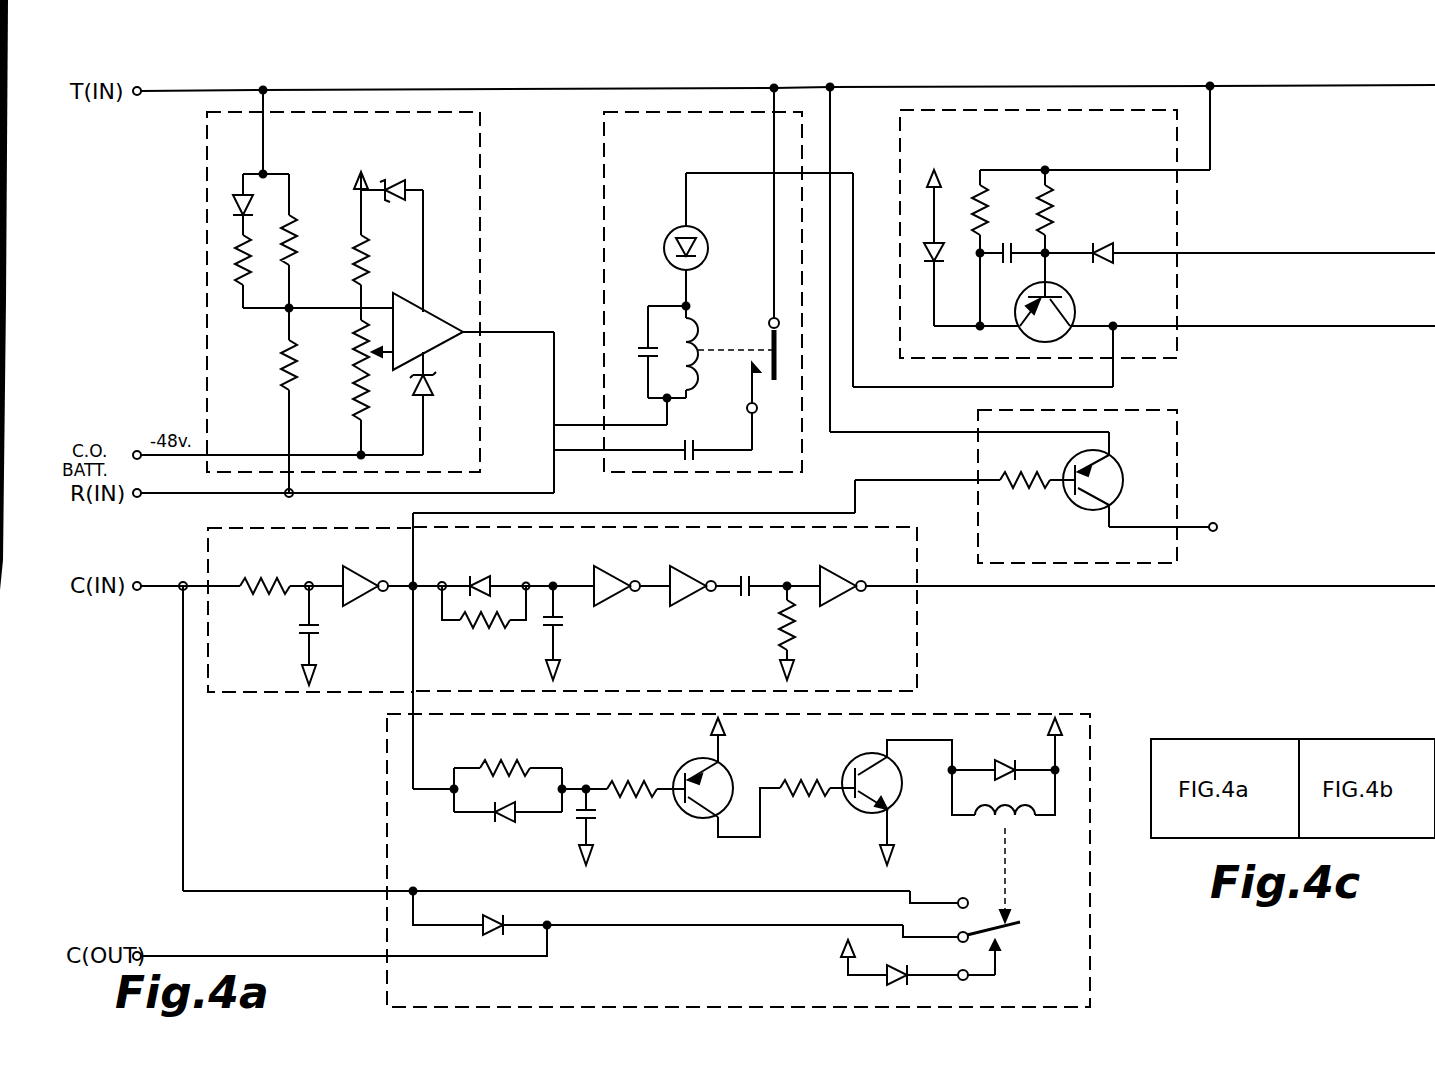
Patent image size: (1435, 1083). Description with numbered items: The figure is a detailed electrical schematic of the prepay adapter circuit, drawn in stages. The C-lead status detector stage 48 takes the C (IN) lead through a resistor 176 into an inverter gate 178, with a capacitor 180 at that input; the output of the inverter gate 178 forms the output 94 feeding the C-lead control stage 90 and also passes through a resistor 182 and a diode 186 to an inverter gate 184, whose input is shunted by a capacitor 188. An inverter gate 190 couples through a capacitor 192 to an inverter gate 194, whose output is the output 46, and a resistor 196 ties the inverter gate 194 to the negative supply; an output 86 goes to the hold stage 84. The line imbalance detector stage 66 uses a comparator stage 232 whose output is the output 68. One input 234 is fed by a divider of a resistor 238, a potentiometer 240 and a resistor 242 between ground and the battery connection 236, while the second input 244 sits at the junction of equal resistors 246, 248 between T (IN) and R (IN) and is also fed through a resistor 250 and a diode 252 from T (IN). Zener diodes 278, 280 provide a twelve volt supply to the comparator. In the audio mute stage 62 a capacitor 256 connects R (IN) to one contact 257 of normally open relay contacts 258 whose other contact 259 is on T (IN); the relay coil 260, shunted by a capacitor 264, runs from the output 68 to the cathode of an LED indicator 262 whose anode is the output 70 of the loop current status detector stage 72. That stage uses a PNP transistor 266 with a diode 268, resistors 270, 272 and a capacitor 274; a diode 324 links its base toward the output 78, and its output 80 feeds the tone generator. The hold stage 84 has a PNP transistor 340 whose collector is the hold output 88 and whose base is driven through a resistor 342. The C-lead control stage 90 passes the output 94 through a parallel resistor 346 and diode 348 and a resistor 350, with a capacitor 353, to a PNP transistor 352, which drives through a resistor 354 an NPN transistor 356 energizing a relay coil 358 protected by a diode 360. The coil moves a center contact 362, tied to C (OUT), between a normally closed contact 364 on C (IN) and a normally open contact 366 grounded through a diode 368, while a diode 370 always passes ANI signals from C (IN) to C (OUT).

The output of the C-lead status detector stage 46 is at (1190, 590).
The C-lead status detector stage 48 is at (282, 703).
The audio mute stage 62 is at (598, 188).
The line imbalance detector stage 66 is at (480, 140).
The output of the line imbalance detector stage 68 is at (530, 330).
The output of the loop current status detector stage 70 is at (860, 176).
The loop current status detector stage 72 is at (1190, 218).
The output of the ring voltage detector stage 78 is at (1305, 256).
The output of the loop current status detector stage 80 is at (1256, 336).
The hold stage 84 is at (1190, 446).
The output of the C-lead status detector stage 86 is at (838, 512).
The output of the hold stage 88 is at (1214, 532).
The C-lead control stage 90 is at (378, 984).
The output of the C-lead status detector stage 94 is at (390, 700).
The resistor 176 is at (282, 578).
The inverter gate 178 is at (366, 562).
The capacitor 180 is at (297, 640).
The resistor 182 is at (484, 628).
The inverter gate 184 is at (602, 598).
The diode 186 is at (490, 582).
The capacitor 188 is at (567, 632).
The inverter gate 190 is at (690, 602).
The capacitor 192 is at (757, 598).
The inverter gate 194 is at (840, 600).
The resistor 196 is at (793, 635).
The comparator stage 232 is at (432, 310).
The input of the comparator stage 234 is at (384, 360).
The −48 volt central office battery connection 236 is at (264, 450).
The resistor 238 is at (381, 246).
The potentiometer 240 is at (355, 340).
The resistor 242 is at (355, 412).
The second input of the comparator 244 is at (316, 305).
The resistor 246 is at (290, 245).
The resistor 248 is at (282, 370).
The resistor 250 is at (240, 290).
The diode 252 is at (238, 205).
The capacitor 256 is at (697, 445).
The contact of the relay contacts 257 is at (765, 392).
The normally open relay contacts 258 is at (736, 369).
The contact of the relay contacts 259 is at (768, 340).
The relay coil 260 is at (692, 322).
The LED indicator 262 is at (705, 236).
The capacitor 264 is at (640, 338).
The PNP transistor 266 is at (1078, 300).
The diode 268 is at (950, 258).
The resistor 270 is at (988, 218).
The resistor 272 is at (1052, 222).
The capacitor 274 is at (993, 258).
The zener diode 278 is at (400, 180).
The zener diode 280 is at (436, 392).
The diode 324 is at (1105, 242).
The PNP transistor 340 is at (1145, 452).
The resistor 342 is at (1028, 472).
The resistor 346 is at (524, 764).
The diode 348 is at (505, 822).
The resistor 350 is at (635, 778).
The PNP transistor 352 is at (690, 818).
The capacitor 353 is at (595, 822).
The resistor 354 is at (812, 778).
The NPN transistor 356 is at (850, 808).
The relay coil 358 is at (1020, 825).
The diode 360 is at (1005, 760).
The movable center contact 362 is at (1015, 925).
The normally closed contact 364 is at (975, 878).
The normally open contact 366 is at (972, 978).
The diode 368 is at (900, 963).
The diode 370 is at (495, 915).